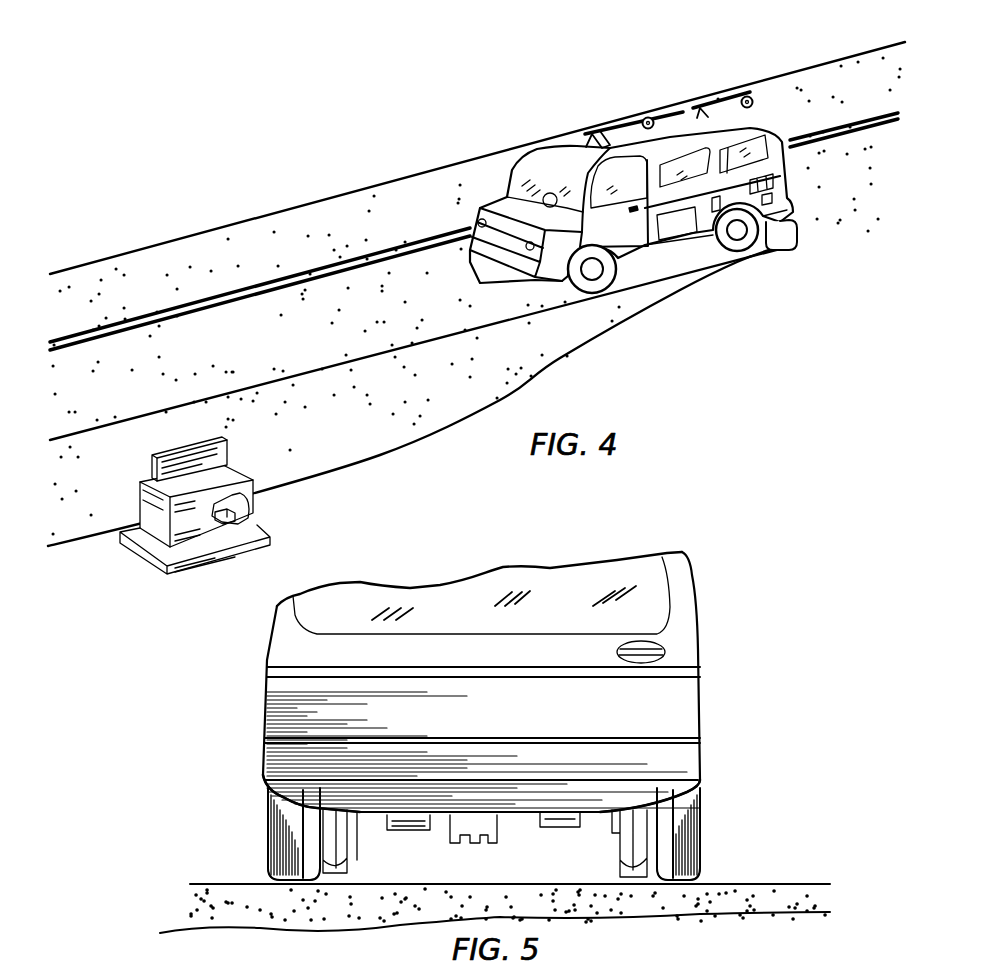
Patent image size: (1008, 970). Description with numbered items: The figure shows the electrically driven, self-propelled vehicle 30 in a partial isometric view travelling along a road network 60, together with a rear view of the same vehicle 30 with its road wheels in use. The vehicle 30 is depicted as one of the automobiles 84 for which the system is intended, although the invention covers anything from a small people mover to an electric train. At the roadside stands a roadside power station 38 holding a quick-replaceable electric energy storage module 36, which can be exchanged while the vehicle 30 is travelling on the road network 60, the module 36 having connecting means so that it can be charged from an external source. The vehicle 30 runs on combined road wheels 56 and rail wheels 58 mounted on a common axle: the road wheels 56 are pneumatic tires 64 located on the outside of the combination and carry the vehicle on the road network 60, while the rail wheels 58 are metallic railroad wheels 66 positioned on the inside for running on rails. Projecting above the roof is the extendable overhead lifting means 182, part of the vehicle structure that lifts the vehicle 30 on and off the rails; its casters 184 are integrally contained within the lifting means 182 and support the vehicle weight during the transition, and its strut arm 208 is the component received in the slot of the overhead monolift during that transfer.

In FIG. 4, the vehicle 30 is at (778, 241).
In FIG. 5, the vehicle 30 is at (700, 593).
In FIG. 4, the electric energy storage module 36 is at (255, 521).
In FIG. 4, the roadside power station 38 is at (147, 540).
In FIG. 4, the road wheels 56 is at (594, 294).
In FIG. 5, the road wheels 56 is at (268, 820).
In FIG. 5, the rail wheels 58 is at (285, 878).
In FIG. 4, the road network 60 is at (207, 262).
In FIG. 5, the road network 60 is at (195, 922).
In FIG. 5, the pneumatic tires 64 is at (263, 790).
In FIG. 5, the metallic railroad wheels 66 is at (345, 850).
In FIG. 4, the automobiles 84 is at (507, 200).
In FIG. 4, the overhead lifting means 182 is at (627, 113).
In FIG. 4, the casters 184 is at (648, 118).
In FIG. 4, the strut arm 208 is at (613, 123).